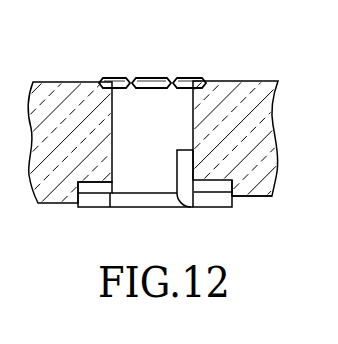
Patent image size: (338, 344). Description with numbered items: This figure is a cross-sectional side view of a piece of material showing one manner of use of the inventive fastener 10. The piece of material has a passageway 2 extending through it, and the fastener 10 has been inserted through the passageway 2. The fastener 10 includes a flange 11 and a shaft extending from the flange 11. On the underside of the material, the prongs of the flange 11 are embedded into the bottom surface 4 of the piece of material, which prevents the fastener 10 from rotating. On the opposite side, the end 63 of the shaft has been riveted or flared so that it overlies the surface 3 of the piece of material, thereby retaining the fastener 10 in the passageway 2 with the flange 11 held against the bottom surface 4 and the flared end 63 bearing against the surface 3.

The passageway 2 is at (193, 110).
The surface 3 is at (238, 82).
The bottom surface 4 is at (252, 197).
The fastener 10 is at (108, 223).
The flange 11 is at (172, 200).
The end 63 is at (118, 79).